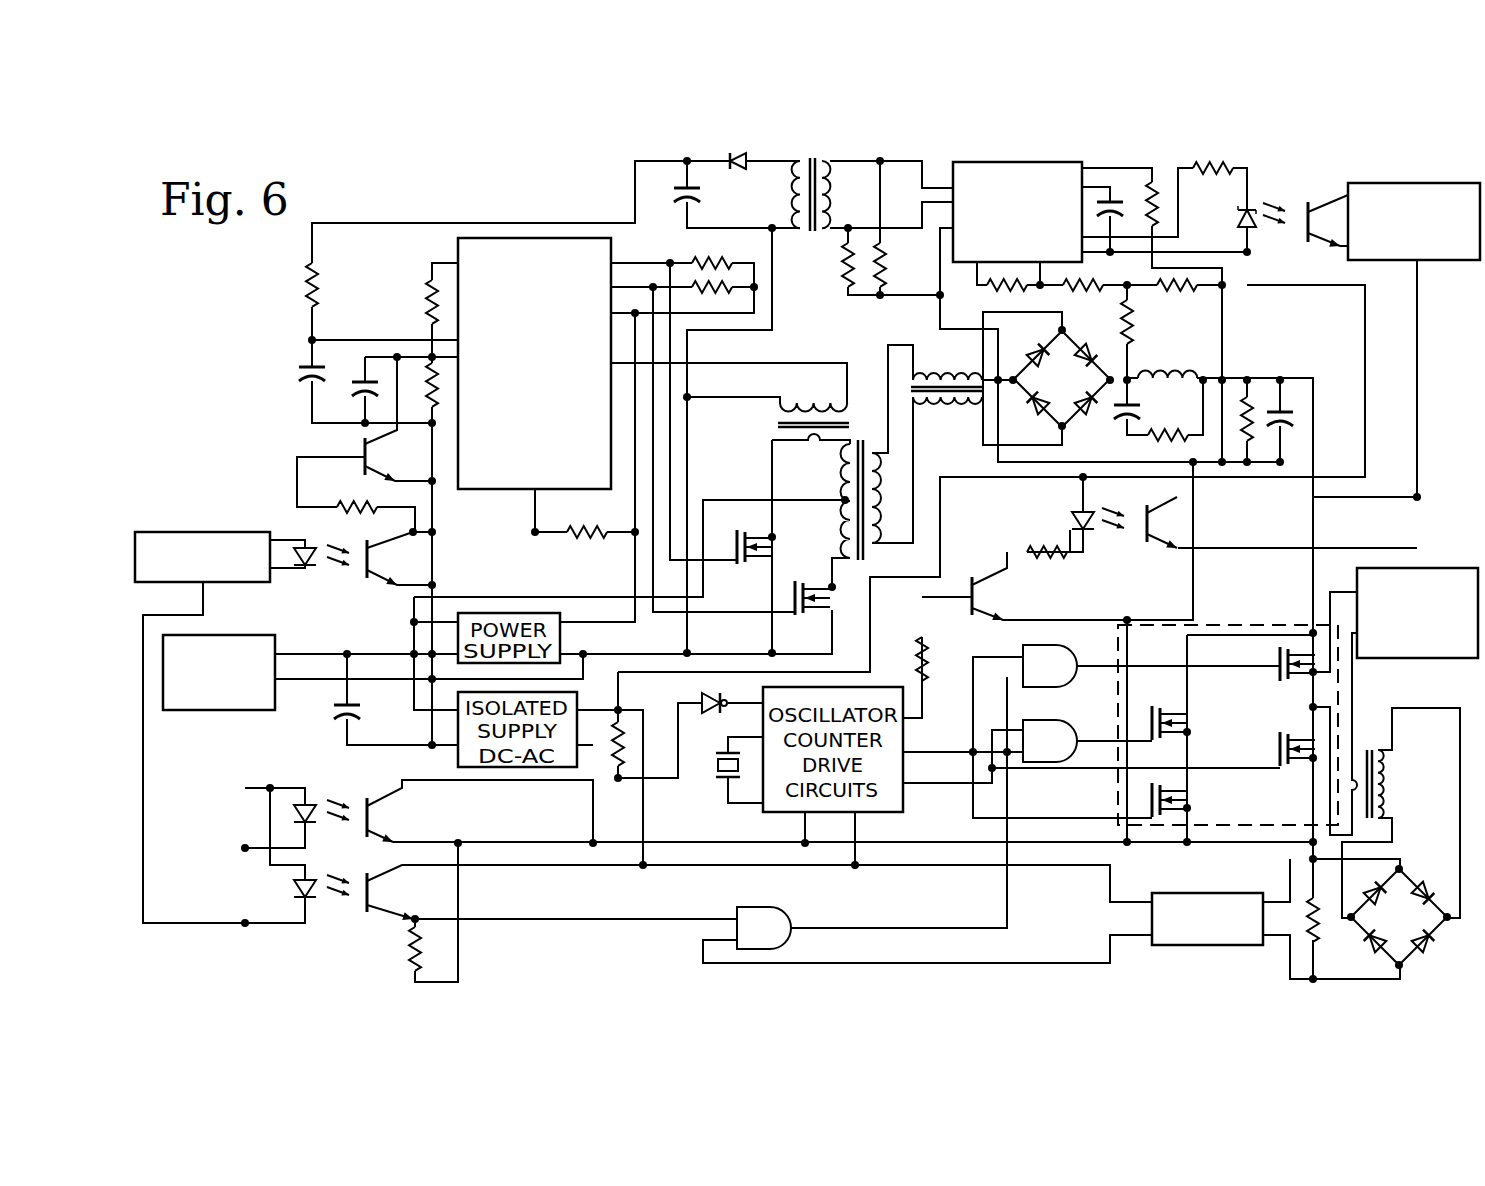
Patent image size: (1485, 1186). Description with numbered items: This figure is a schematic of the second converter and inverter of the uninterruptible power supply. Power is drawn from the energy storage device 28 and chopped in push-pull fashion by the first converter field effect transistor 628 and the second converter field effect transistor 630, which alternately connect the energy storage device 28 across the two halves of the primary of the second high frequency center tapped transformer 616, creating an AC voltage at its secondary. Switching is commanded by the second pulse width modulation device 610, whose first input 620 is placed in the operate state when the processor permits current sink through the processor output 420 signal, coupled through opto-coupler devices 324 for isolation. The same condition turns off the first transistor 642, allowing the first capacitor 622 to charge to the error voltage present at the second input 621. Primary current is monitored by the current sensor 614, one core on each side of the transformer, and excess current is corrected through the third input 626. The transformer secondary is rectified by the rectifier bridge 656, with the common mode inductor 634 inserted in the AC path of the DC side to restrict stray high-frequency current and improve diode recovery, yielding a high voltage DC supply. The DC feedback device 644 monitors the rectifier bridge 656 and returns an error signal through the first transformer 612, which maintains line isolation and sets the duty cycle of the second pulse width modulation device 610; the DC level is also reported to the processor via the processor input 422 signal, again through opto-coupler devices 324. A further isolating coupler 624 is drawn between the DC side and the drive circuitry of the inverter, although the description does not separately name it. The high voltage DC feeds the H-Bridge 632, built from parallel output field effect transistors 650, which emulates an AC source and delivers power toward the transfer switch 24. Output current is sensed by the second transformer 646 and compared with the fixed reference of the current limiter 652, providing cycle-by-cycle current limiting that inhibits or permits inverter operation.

The second pulse width modulation device 610 is at (455, 248).
The first transformer 612 is at (803, 237).
The current sensor 614 is at (775, 424).
The second high frequency center tapped transformer 616 is at (870, 553).
The first input 620 is at (535, 514).
The second input 621 is at (445, 332).
The first capacitor 622 is at (345, 393).
The optical isolator 624 is at (1113, 543).
The third input 626 is at (770, 363).
The first converter field effect transistor 628 is at (738, 567).
The second converter field effect transistor 630 is at (800, 617).
The H-Bridge 632 is at (1118, 788).
The common mode inductor 634 is at (950, 412).
The first transistor 642 is at (360, 455).
The DC feedback device 644 is at (1014, 160).
The second transformer 646 is at (1408, 799).
The output field effect transistors 650 is at (1287, 730).
The current limiter 652 is at (1205, 893).
The rectifier bridge 656 is at (1112, 376).
The transfer switch 24 is at (1405, 658).
The energy storage device 28 is at (208, 712).
The opto-coupler devices 324 is at (333, 578).
The processor output 420 is at (217, 532).
The processor input 422 is at (1410, 183).